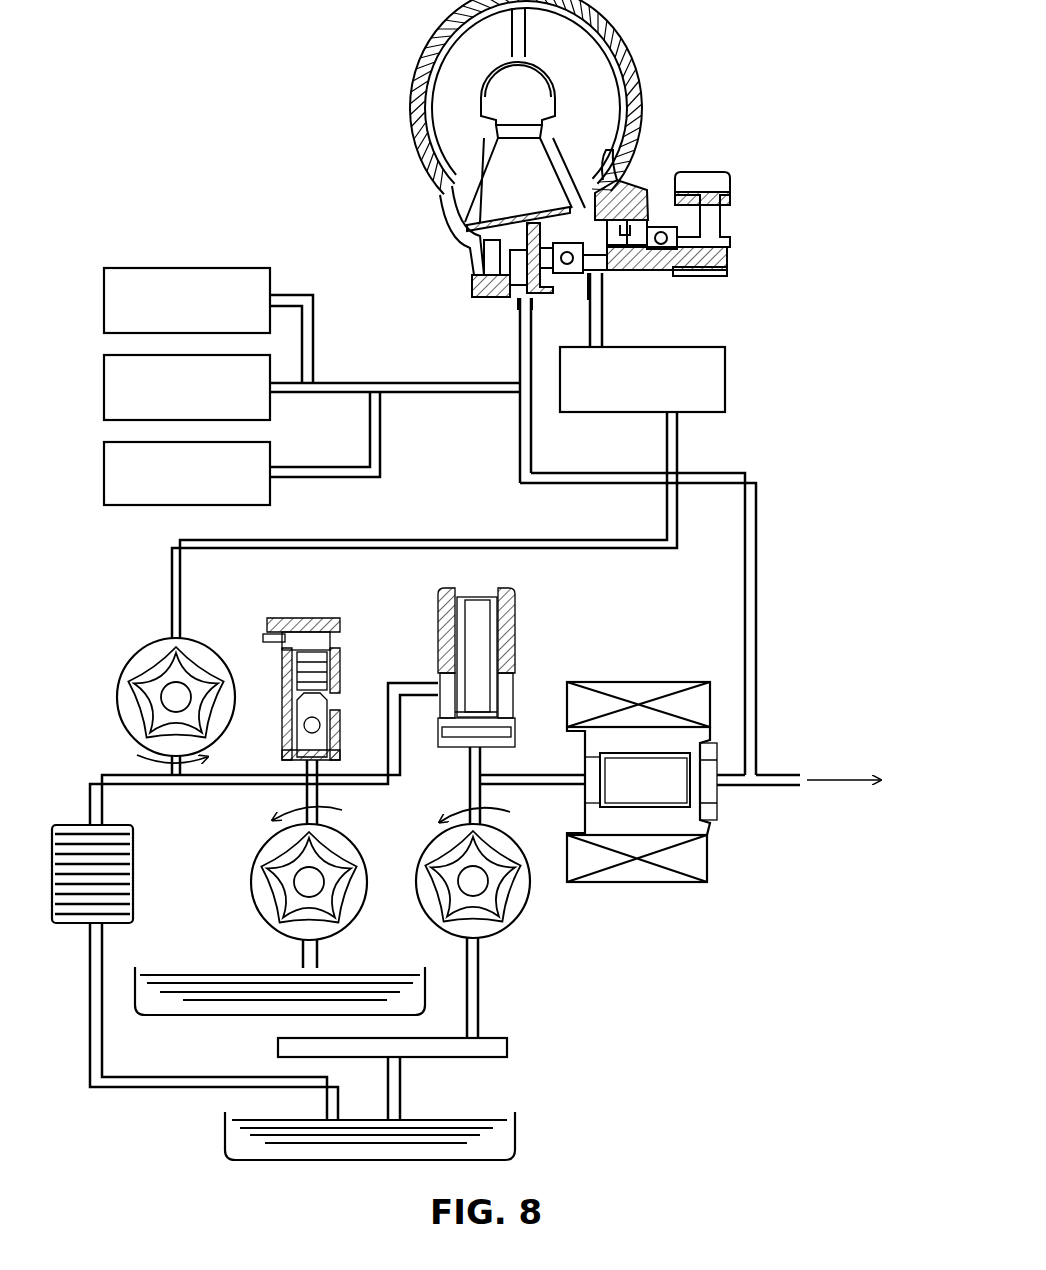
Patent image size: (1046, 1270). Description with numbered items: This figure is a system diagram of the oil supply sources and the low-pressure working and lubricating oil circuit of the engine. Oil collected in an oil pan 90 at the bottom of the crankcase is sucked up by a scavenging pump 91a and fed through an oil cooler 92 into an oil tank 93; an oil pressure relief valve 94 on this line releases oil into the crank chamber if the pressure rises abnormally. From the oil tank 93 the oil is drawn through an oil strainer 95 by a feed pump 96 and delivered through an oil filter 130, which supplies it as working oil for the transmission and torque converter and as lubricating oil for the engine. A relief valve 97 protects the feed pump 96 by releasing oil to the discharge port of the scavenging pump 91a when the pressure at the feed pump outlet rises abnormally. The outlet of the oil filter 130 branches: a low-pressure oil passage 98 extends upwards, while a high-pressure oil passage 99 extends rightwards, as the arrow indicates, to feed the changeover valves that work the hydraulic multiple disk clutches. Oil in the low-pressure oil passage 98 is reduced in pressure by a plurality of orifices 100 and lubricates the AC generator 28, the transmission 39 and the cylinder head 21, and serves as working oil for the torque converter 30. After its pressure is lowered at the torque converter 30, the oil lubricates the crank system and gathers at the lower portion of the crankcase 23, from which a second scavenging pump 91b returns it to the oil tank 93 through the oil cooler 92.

The torque converter 30 is at (652, 41).
The AC generator 28 is at (205, 278).
The transmission 39 is at (257, 408).
The cylinder head 21 is at (125, 500).
The crankcase 23 is at (722, 385).
The orifices 100 is at (336, 380).
The low-pressure oil passage 98 is at (757, 522).
The scavenging pump 91b is at (202, 658).
The oil pressure relief valve 94 is at (338, 658).
The relief valve 97 is at (517, 617).
The oil filter 130 is at (642, 870).
The high-pressure oil passage 99 is at (782, 785).
The oil cooler 92 is at (122, 870).
The scavenging pump 91a is at (270, 910).
The oil pan 90 is at (173, 1008).
The feed pump 96 is at (505, 922).
The oil strainer 95 is at (490, 1052).
The oil tank 93 is at (512, 1140).